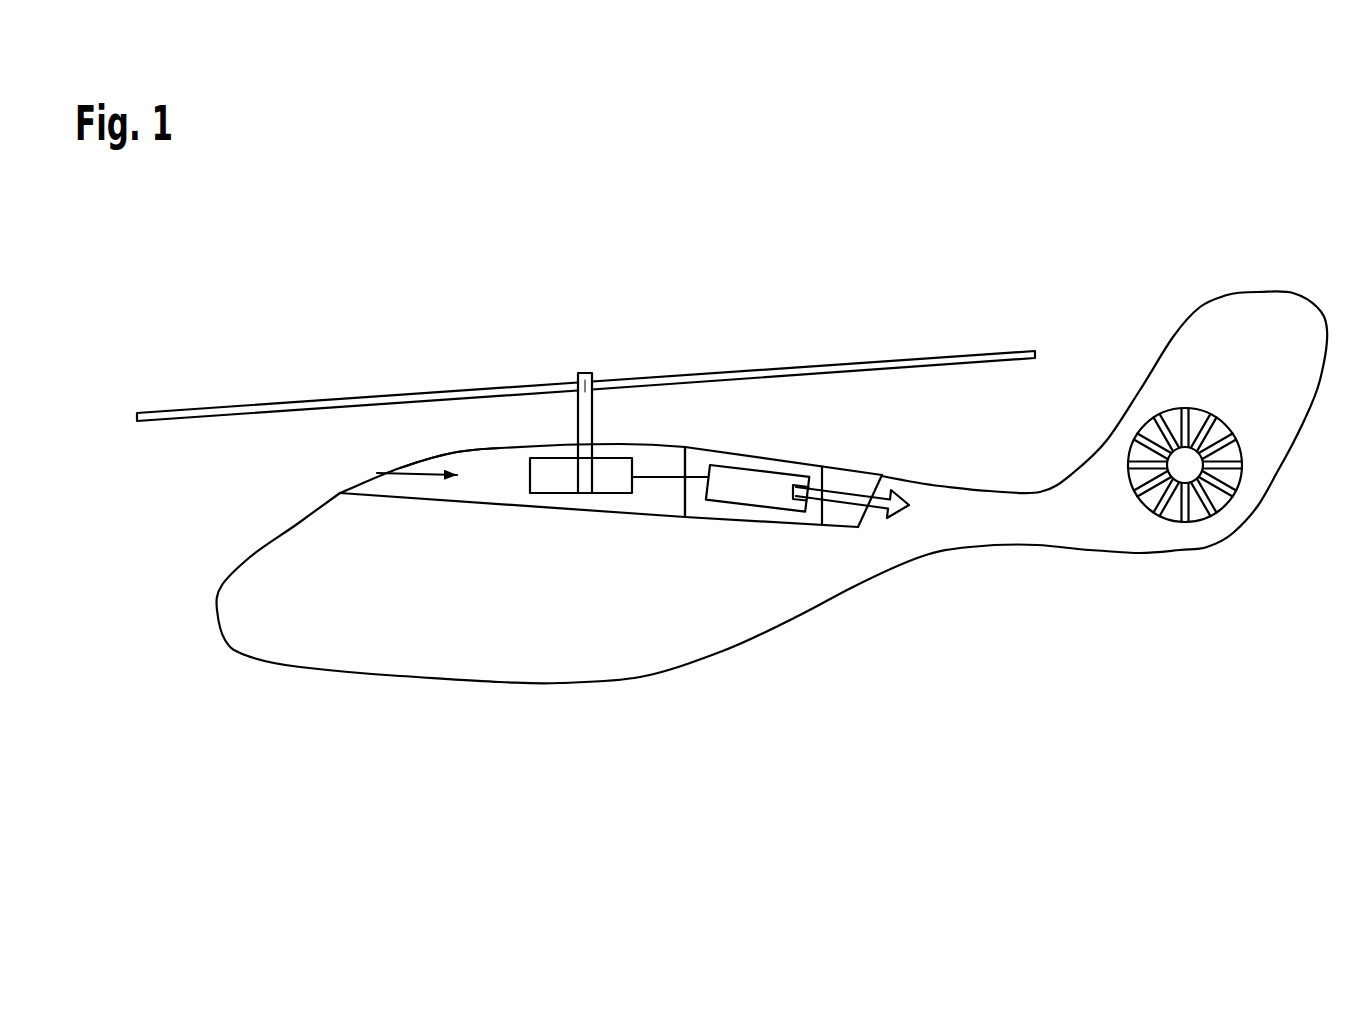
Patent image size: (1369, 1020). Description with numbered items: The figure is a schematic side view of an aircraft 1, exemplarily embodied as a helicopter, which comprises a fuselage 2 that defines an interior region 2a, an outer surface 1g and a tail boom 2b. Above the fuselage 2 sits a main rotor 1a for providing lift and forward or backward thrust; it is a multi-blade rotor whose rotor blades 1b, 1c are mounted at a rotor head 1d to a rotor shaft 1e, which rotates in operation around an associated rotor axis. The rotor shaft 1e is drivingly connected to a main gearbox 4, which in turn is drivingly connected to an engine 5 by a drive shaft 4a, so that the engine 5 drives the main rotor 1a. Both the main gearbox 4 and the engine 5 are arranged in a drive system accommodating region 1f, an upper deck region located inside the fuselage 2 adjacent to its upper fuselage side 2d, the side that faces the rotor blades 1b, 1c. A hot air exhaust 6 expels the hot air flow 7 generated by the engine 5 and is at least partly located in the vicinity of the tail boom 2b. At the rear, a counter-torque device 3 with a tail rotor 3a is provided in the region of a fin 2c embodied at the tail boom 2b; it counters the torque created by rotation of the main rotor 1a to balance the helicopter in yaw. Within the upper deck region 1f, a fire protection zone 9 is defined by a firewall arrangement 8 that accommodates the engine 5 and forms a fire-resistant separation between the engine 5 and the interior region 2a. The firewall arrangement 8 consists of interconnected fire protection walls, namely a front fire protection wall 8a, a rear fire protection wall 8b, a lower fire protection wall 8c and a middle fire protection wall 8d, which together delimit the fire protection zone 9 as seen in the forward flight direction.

The aircraft 1 is at (287, 293).
The main rotor 1a is at (775, 353).
The rotor blade 1b is at (213, 418).
The rotor blade 1c is at (977, 358).
The rotor head 1d is at (583, 368).
The rotor shaft 1e is at (587, 418).
The drive system accommodating region 1f is at (377, 473).
The outer surface 1g is at (458, 452).
The fuselage 2 is at (447, 683).
The interior region 2a is at (353, 622).
The tail boom 2b is at (1000, 523).
The fin 2c is at (1277, 308).
The upper fuselage side 2d is at (667, 444).
The counter-torque device 3 is at (1270, 517).
The tail rotor 3a is at (1177, 513).
The main gearbox 4 is at (550, 458).
The drive shaft 4a is at (550, 498).
The engine 5 is at (765, 465).
The hot air exhaust 6 is at (863, 473).
The hot air flow 7 is at (885, 488).
The firewall arrangement 8 is at (748, 530).
The front fire protection wall 8a is at (683, 504).
The rear fire protection wall 8b is at (855, 527).
The lower fire protection wall 8c is at (767, 527).
The middle fire protection wall 8d is at (823, 477).
The fire protection zone 9 is at (802, 455).